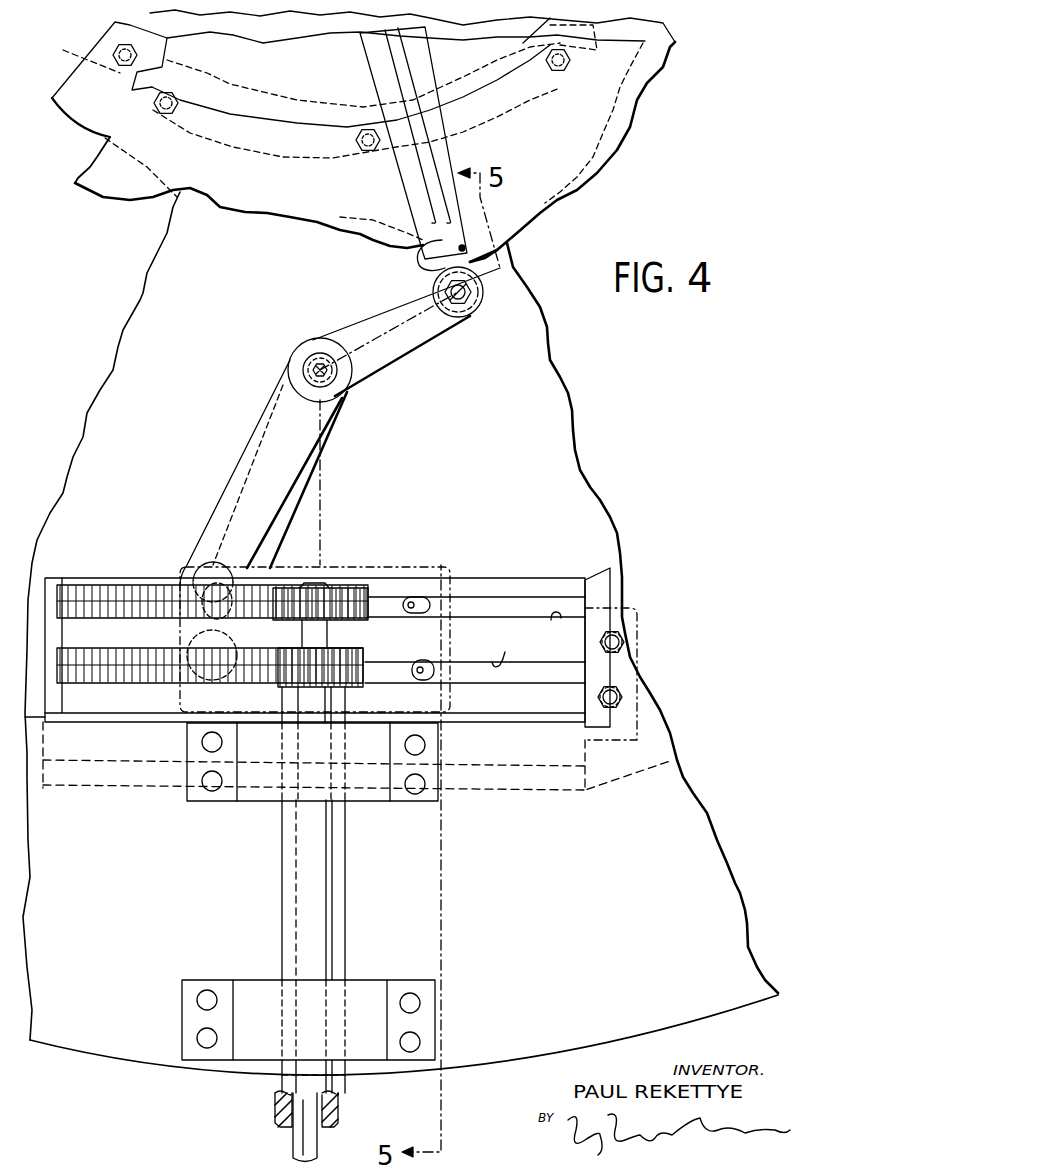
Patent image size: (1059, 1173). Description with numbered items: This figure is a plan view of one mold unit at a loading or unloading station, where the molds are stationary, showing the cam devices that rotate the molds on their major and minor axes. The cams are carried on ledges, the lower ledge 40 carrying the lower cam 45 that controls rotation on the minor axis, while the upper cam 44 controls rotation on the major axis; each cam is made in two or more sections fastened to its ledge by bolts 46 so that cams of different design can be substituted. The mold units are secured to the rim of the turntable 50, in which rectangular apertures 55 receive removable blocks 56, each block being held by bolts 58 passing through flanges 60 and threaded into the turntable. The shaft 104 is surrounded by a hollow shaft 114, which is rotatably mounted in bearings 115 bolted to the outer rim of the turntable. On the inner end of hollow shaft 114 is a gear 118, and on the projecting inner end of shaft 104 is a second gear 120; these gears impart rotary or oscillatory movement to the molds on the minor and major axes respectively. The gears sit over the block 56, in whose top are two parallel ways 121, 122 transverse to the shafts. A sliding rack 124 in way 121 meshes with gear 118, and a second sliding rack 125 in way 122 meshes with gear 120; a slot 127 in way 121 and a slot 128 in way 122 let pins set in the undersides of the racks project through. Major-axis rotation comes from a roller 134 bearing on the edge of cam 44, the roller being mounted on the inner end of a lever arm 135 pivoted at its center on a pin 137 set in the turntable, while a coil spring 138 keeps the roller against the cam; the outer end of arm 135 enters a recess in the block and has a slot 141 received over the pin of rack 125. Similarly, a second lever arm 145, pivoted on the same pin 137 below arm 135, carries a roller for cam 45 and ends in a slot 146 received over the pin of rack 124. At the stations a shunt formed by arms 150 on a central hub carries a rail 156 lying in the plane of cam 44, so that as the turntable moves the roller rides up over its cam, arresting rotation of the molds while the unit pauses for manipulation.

The ledge 40 is at (650, 28).
The upper cam 44 is at (117, 183).
The lower cam 45 is at (85, 107).
The bolts 46 is at (177, 92).
The turntable 50 is at (695, 822).
The rectangular apertures 55 is at (590, 590).
The removable block 56 is at (507, 585).
The bolts 58 is at (620, 697).
The flanges 60 is at (635, 618).
The shaft 104 is at (305, 1133).
The hollow shaft 114 is at (282, 1098).
The bearings 115 is at (350, 988).
The gear 118 is at (366, 652).
The second gear 120 is at (352, 586).
The way 121 is at (516, 652).
The way 122 is at (558, 628).
The sliding rack 124 is at (83, 675).
The second sliding rack 125 is at (103, 583).
The slot 127 is at (420, 664).
The slot 128 is at (411, 600).
The roller 134 is at (473, 302).
The lever arm 135 is at (407, 340).
The pin 137 is at (333, 378).
The coil spring 138 is at (340, 368).
The slot 141 is at (190, 570).
The lever arm 145 is at (293, 500).
The slot 146 is at (197, 640).
The arms 150 is at (443, 163).
The rail 156 is at (516, 237).